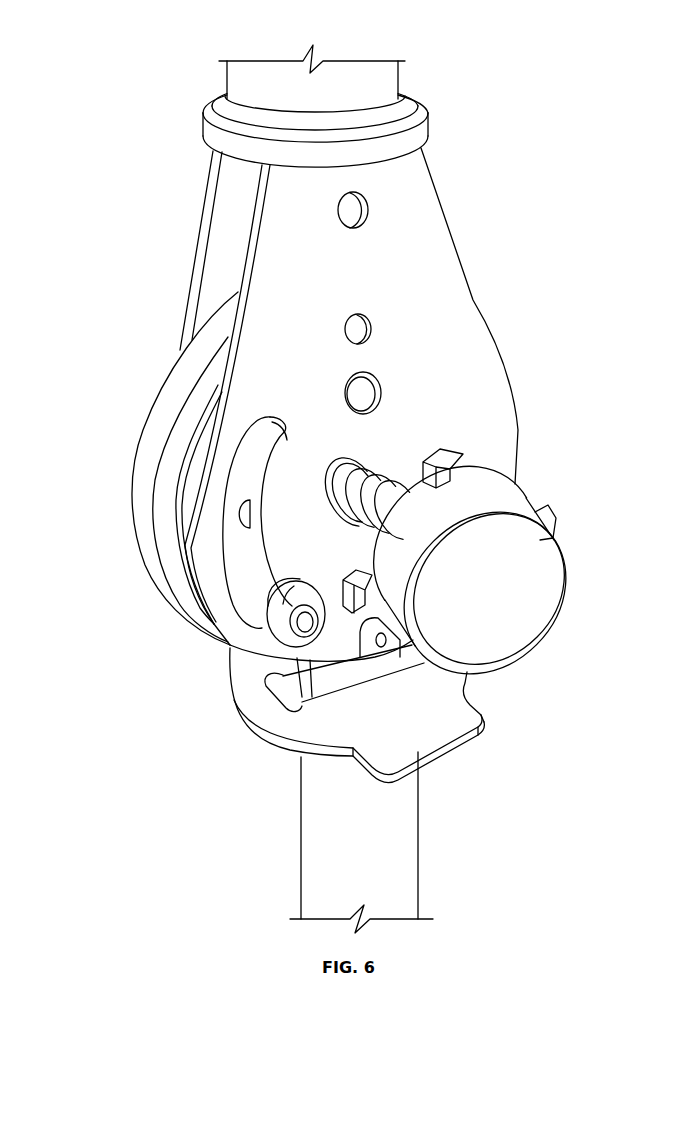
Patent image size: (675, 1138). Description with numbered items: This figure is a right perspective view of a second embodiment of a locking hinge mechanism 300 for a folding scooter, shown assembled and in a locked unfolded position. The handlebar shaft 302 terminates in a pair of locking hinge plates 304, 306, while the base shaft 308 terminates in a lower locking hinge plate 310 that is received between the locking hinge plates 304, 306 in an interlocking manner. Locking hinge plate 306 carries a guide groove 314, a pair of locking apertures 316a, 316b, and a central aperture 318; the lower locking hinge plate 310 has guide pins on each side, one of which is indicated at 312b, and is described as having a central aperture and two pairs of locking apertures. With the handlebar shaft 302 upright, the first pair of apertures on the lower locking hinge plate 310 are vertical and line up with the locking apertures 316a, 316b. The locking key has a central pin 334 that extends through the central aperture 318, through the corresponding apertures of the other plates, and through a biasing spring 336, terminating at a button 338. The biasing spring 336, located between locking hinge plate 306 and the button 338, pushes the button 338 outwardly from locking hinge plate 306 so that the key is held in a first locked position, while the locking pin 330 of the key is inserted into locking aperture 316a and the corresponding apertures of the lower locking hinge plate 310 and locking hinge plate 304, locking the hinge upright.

The locking hinge mechanism 300 is at (118, 30).
The handlebar shaft 302 is at (228, 70).
The locking hinge plate 304 is at (207, 218).
The locking hinge plate 306 is at (247, 273).
The base shaft 308 is at (313, 843).
The lower locking hinge plate 310 is at (140, 490).
The arcuate slot 312b is at (267, 622).
The guide groove 314 is at (230, 583).
The locking aperture 316a is at (383, 383).
The locking aperture 316b is at (362, 572).
The central aperture 318 is at (347, 462).
The locking pin 330 is at (372, 390).
The central pin 334 is at (357, 492).
The biasing spring 336 is at (383, 456).
The button 338 is at (538, 605).